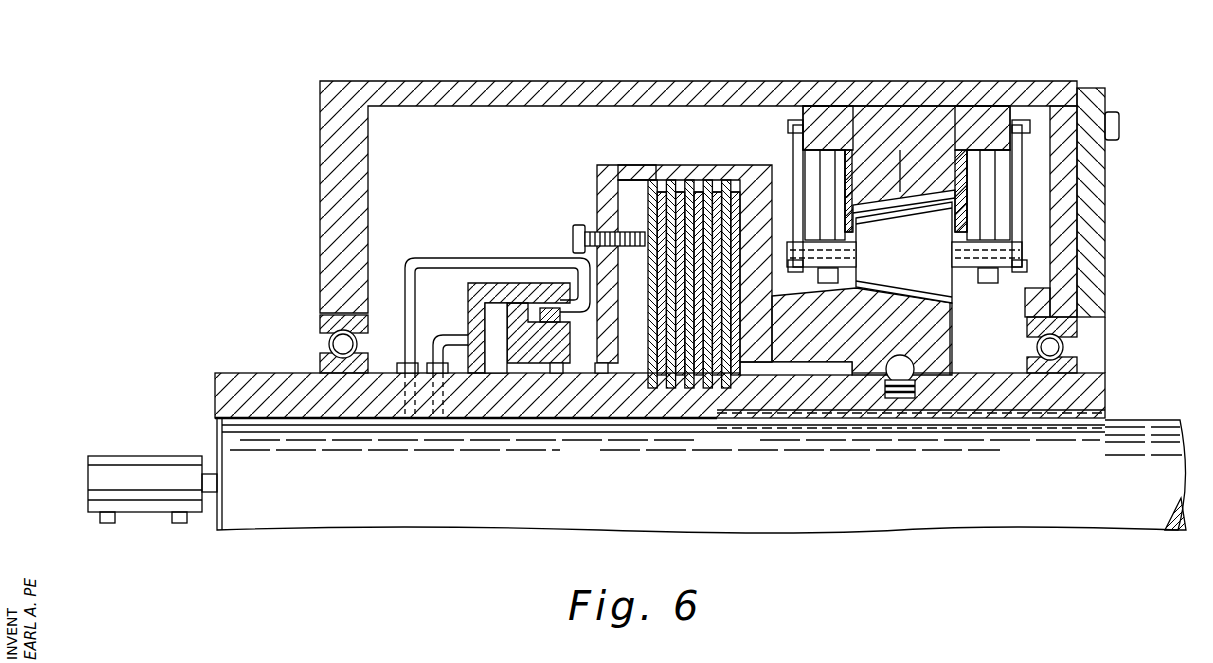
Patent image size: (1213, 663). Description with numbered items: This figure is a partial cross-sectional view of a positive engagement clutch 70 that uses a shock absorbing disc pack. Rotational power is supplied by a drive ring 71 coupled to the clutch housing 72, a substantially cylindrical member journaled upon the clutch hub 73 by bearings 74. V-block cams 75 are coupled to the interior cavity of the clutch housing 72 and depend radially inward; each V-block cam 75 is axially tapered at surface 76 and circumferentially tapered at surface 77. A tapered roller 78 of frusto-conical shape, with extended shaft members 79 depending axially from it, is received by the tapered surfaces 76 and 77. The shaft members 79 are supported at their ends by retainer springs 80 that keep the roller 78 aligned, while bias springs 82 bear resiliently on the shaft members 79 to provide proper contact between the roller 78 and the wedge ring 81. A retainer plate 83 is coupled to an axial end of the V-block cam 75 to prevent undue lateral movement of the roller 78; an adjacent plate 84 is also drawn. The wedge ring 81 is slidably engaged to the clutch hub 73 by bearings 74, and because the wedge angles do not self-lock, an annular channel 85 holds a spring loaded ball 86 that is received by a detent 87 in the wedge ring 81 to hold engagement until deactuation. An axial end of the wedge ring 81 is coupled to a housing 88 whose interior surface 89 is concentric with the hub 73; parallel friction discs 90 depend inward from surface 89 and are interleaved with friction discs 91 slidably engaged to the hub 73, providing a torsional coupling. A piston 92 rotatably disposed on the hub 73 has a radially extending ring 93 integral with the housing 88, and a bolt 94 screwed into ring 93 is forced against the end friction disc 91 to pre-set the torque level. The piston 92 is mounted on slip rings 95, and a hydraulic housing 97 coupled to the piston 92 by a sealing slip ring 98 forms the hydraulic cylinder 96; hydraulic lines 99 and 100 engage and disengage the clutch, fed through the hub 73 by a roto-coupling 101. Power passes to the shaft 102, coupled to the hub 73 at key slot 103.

The positive engagement clutch 70 is at (318, 76).
The drive ring 71 is at (1100, 233).
The clutch housing 72 is at (1042, 94).
The clutch hub 73 is at (226, 382).
The bearings 74 is at (330, 344).
The V-block cam 75 is at (830, 122).
The axially tapered surface 76 is at (925, 190).
The circumferentially tapered surface 77 is at (880, 196).
The tapered roller 78 is at (902, 261).
The extended shaft members 79 is at (808, 270).
The retainer springs 80 is at (793, 160).
The wedge ring 81 is at (858, 352).
The bias springs 82 is at (828, 278).
The retainer plate 83 is at (963, 148).
The plate 84 is at (943, 372).
The annular channel 85 is at (898, 395).
The spring loaded ball 86 is at (908, 386).
The detent 87 is at (938, 354).
The housing 88 is at (632, 168).
The interior surface 89 is at (640, 184).
The friction discs 90 is at (700, 183).
The friction discs 91 is at (705, 388).
The piston 92 is at (527, 352).
The radially extending ring 93 is at (600, 176).
The bolt 94 is at (578, 224).
The slip ring 95 is at (556, 370).
The hydraulic cylinder 96 is at (496, 357).
The hydraulic housing 97 is at (488, 288).
The sealing slip ring 98 is at (558, 318).
The hydraulic line 99 is at (444, 338).
The hydraulic line 100 is at (427, 266).
The roto-coupling 101 is at (146, 466).
The shaft 102 is at (1123, 462).
The key slot 103 is at (1042, 422).